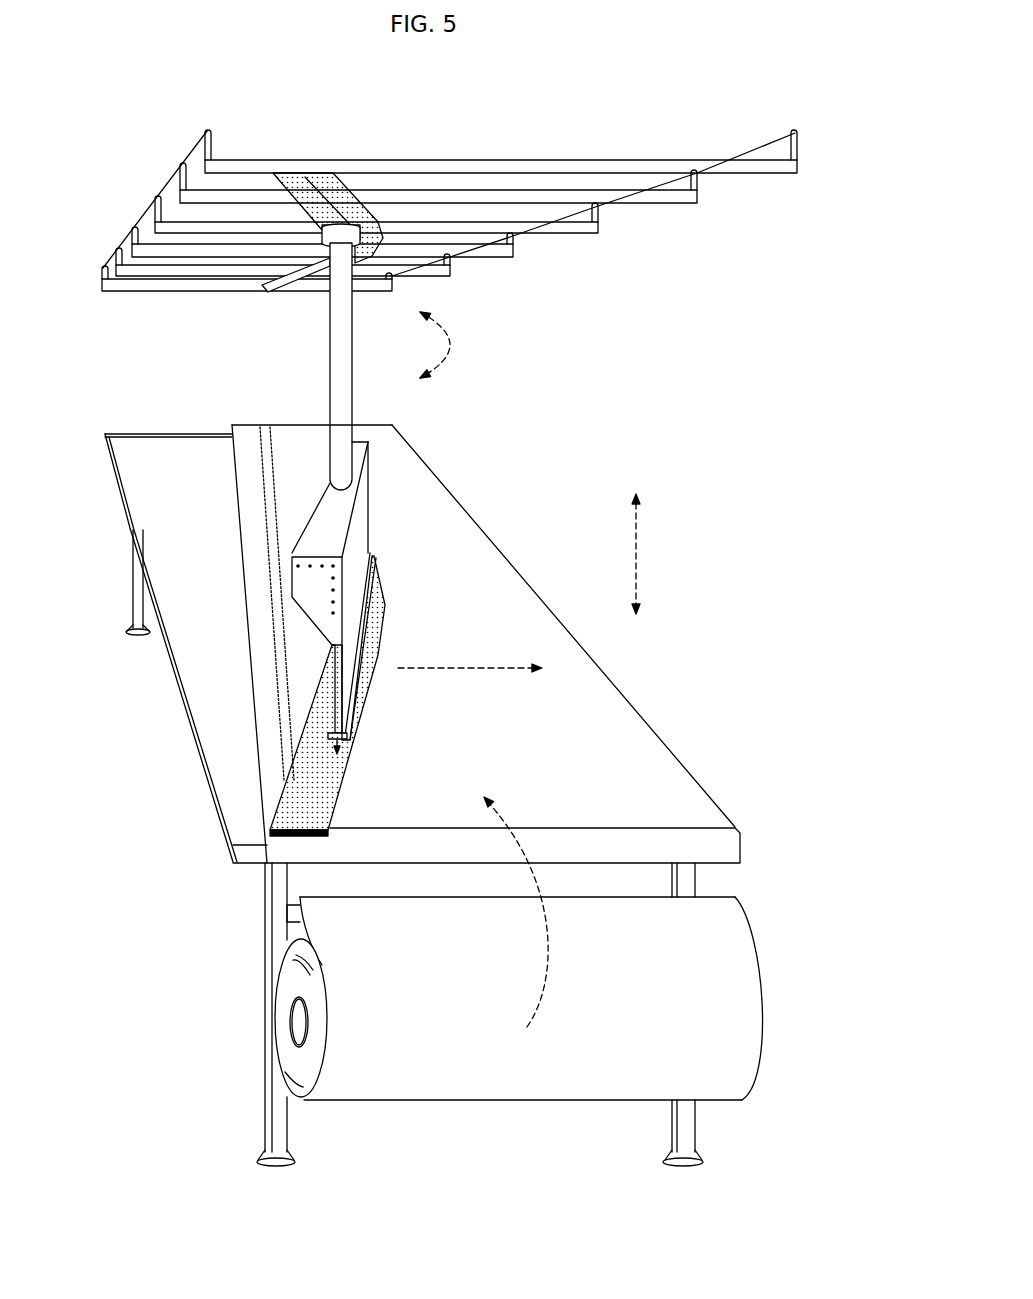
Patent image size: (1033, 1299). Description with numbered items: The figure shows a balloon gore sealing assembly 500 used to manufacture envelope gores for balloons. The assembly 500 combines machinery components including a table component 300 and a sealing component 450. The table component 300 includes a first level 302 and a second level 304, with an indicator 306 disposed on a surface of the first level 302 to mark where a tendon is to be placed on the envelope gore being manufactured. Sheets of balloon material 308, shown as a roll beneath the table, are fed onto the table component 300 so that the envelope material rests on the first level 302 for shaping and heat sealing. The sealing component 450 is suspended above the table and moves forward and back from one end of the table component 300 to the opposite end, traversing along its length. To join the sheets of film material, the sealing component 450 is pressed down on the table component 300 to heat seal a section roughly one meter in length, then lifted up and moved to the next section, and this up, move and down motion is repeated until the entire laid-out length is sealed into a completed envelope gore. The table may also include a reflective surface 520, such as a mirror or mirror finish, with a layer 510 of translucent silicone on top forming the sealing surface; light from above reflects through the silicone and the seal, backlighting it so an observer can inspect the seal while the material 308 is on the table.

The balloon gore sealing assembly 500 is at (775, 35).
The table component 300 is at (670, 727).
The first level 302 is at (310, 425).
The second level 304 is at (150, 432).
The indicator 306 is at (275, 608).
The balloon material 308 is at (488, 1020).
The sealing component 450 is at (368, 434).
The layer of translucent material 510 is at (285, 832).
The reflective surface 520 is at (310, 797).